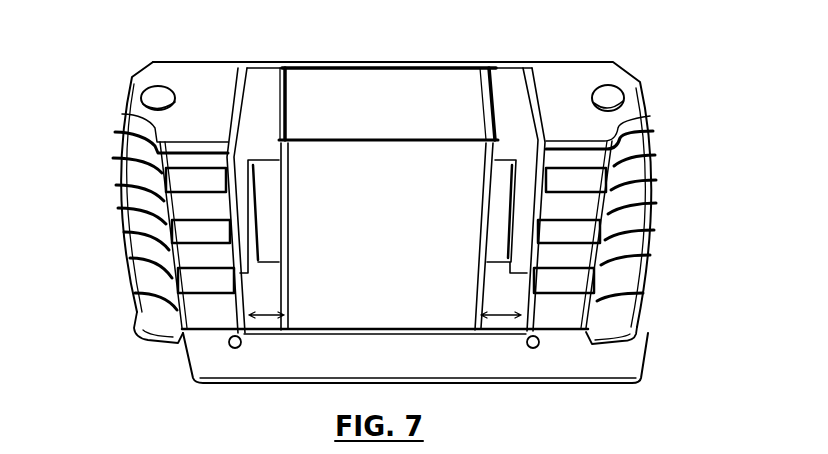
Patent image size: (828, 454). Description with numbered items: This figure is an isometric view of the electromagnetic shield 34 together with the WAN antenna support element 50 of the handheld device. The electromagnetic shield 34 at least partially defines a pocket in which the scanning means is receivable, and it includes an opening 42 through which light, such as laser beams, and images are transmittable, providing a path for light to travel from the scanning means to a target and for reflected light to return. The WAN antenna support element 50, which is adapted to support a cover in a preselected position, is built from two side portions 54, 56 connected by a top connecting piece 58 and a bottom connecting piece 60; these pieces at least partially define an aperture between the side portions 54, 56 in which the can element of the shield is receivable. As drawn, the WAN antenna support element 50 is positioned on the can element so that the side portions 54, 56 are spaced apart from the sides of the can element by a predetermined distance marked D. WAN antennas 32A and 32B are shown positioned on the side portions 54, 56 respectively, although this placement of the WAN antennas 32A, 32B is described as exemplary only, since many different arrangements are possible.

The WAN antenna support element 50 is at (645, 93).
The top connecting piece 58 is at (262, 77).
The opening 42 is at (466, 89).
The electromagnetic shield 34 is at (384, 243).
The WAN antenna 32A is at (118, 215).
The WAN antenna 32B is at (635, 238).
The side portion 54 is at (147, 310).
The side portion 56 is at (620, 305).
The bottom connecting piece 60 is at (475, 368).